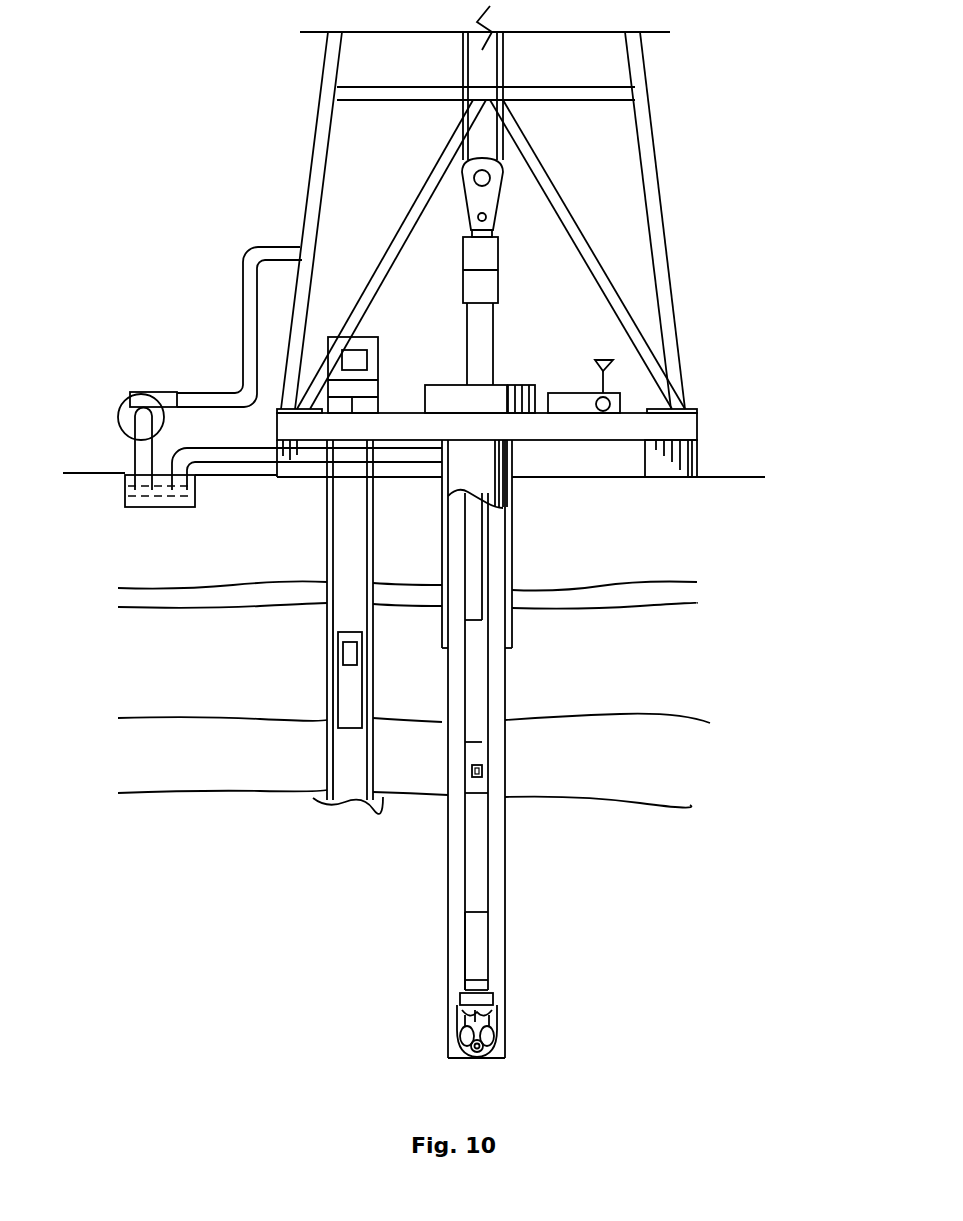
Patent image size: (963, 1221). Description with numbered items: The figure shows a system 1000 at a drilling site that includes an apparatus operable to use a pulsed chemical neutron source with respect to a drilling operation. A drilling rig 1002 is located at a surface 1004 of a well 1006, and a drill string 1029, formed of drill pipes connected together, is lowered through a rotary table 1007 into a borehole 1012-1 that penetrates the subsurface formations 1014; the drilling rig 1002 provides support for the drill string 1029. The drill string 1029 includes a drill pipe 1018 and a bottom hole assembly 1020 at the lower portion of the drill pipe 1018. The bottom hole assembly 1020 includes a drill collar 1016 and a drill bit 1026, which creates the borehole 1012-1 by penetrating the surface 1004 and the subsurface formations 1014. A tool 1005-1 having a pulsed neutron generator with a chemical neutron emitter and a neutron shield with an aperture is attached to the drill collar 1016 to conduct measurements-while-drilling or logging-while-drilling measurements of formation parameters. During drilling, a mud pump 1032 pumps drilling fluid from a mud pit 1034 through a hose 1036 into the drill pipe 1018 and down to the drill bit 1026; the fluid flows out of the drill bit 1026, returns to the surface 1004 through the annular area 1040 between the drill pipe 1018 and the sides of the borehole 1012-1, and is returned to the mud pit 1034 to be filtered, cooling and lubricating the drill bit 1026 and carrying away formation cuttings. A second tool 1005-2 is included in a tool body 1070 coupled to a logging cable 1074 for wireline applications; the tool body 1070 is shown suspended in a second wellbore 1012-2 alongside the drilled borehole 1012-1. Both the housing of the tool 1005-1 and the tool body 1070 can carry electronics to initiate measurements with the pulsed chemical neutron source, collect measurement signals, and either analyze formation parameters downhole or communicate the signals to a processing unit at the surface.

The system 1000 is at (220, 90).
The drilling rig 1002 is at (660, 170).
The surface 1004 is at (710, 473).
The tool 1005-1 is at (482, 772).
The tool 1005-2 is at (346, 650).
The well 1006 is at (516, 467).
The rotary table 1007 is at (444, 384).
The borehole 1012-1 is at (496, 592).
The second wellbore 1012-2 is at (327, 580).
The subsurface formations 1014 is at (118, 553).
The drill collar 1016 is at (478, 753).
The drill pipe 1018 is at (487, 661).
The bottom hole assembly 1020 is at (423, 643).
The drill bit 1026 is at (495, 1022).
The drill string 1029 is at (494, 530).
The mud pump 1032 is at (150, 392).
The mud pit 1034 is at (132, 480).
The hose 1036 is at (243, 335).
The annular area 1040 is at (497, 698).
The tool body 1070 is at (338, 688).
The logging cable 1074 is at (352, 536).